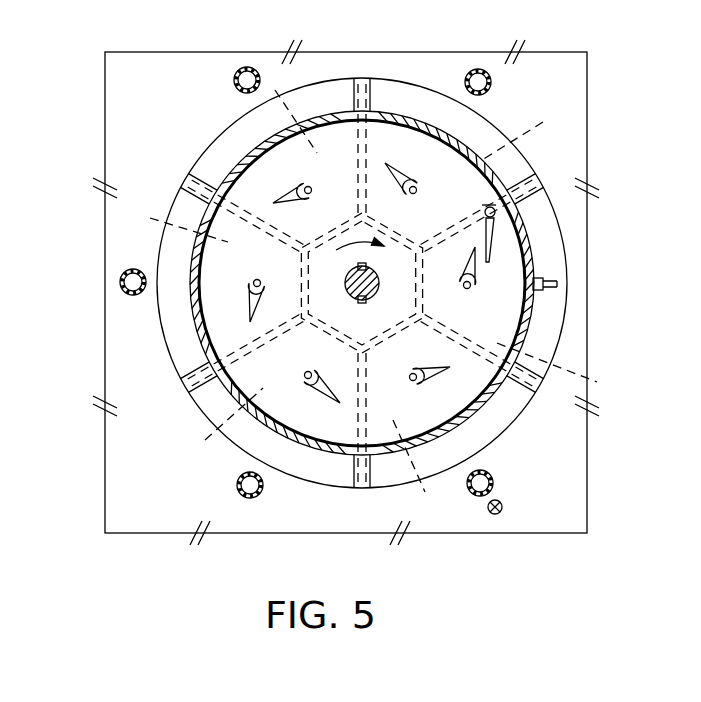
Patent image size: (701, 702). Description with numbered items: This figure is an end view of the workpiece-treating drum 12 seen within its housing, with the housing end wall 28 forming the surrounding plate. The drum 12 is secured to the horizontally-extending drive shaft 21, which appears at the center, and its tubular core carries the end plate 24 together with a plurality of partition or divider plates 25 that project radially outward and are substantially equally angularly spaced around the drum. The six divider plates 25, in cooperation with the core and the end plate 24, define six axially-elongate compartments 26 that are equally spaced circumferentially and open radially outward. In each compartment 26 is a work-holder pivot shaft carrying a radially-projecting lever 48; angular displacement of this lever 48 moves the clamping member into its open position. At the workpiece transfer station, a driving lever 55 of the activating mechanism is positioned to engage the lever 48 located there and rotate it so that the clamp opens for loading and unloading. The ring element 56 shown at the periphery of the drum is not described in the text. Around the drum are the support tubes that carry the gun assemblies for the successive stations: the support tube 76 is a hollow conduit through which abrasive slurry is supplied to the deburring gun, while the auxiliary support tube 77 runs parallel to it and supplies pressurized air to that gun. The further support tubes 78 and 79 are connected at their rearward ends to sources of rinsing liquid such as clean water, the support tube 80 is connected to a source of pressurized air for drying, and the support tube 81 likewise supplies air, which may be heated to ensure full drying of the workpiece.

The drum 12 is at (560, 344).
The drive shaft 21 is at (372, 289).
The end plate 24 is at (397, 90).
The divider plate 25 is at (357, 140).
The compartment 26 is at (377, 291).
The housing end wall 28 is at (151, 508).
The lever 48 is at (285, 198).
The driving lever 55 is at (485, 236).
The liner ring 56 is at (238, 160).
The support tube 76 is at (478, 497).
The auxiliary support tube 77 is at (497, 515).
The support tube 78 is at (250, 497).
The support tube 79 is at (124, 277).
The support tube 80 is at (242, 70).
The support tube 81 is at (476, 70).